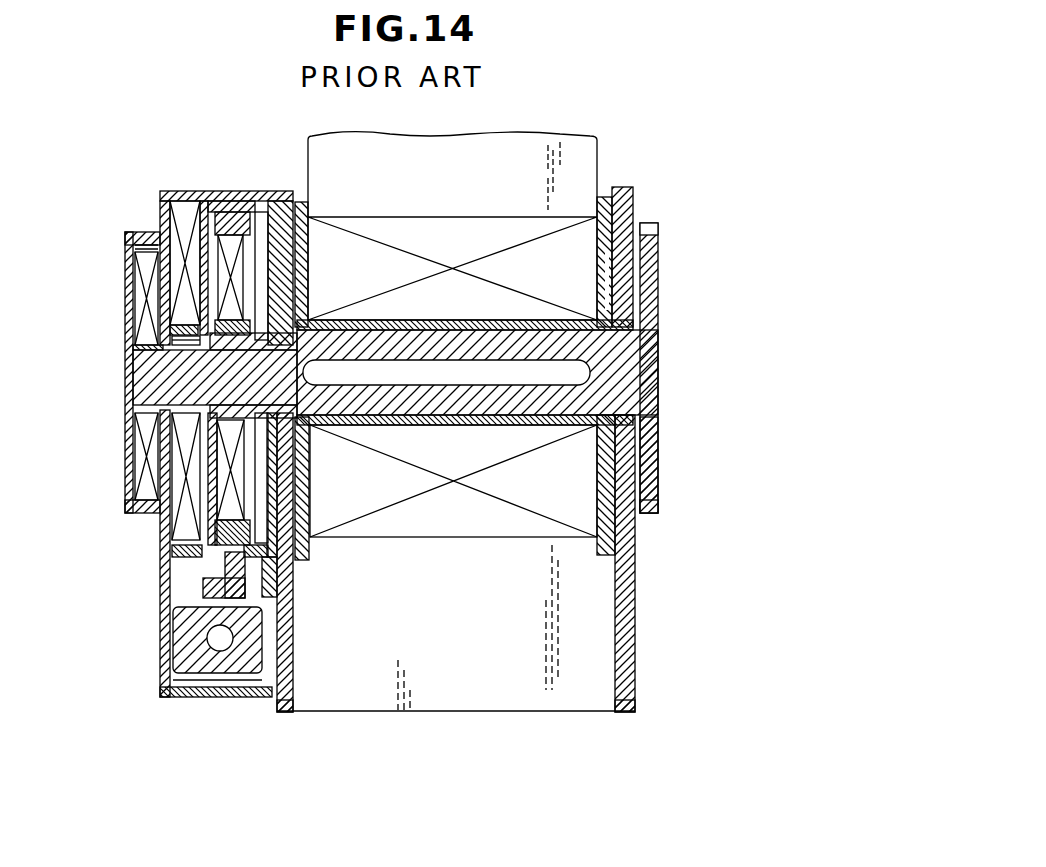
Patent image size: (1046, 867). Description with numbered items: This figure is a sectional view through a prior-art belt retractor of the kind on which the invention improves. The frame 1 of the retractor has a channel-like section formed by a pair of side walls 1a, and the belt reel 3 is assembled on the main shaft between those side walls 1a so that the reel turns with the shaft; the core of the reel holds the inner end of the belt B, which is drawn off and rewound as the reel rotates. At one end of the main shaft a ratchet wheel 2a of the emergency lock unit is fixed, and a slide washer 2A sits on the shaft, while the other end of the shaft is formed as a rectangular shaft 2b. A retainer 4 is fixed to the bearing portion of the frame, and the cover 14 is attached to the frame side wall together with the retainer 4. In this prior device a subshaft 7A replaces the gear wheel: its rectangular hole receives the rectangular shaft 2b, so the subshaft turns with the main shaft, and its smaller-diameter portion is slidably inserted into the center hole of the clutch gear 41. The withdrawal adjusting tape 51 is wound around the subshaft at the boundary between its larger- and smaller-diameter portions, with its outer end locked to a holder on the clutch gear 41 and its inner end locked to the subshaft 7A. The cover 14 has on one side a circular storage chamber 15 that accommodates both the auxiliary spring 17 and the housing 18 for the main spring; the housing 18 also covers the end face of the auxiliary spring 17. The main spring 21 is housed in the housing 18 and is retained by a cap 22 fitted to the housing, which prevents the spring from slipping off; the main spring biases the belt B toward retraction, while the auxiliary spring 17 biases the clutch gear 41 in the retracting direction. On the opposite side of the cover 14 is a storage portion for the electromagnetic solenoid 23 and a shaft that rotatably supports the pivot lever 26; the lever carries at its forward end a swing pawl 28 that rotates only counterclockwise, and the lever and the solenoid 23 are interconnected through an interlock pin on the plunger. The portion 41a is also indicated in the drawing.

The housing 18 is at (160, 220).
The circular storage chamber 15 is at (178, 232).
The cover 14 is at (206, 200).
The clutch gear 41 is at (228, 240).
The retainer 4 is at (280, 200).
The withdrawal adjusting tape 51 is at (310, 222).
The rectangular shaft 2b is at (340, 340).
The belt B is at (588, 165).
The ratchet wheel 2a is at (660, 250).
The slide washer 2A is at (636, 435).
The main spring 21 is at (145, 267).
The cap 22 is at (133, 345).
The subshaft 7A is at (138, 397).
The auxiliary spring 17 is at (182, 535).
The pivot lever 26 is at (203, 593).
The electromagnetic solenoid 23 is at (205, 664).
The bearing portion 41a is at (293, 568).
The swing pawl 28 is at (293, 605).
The frame 1 is at (605, 640).
The side walls 1a is at (295, 693).
The belt reel 3 is at (516, 426).